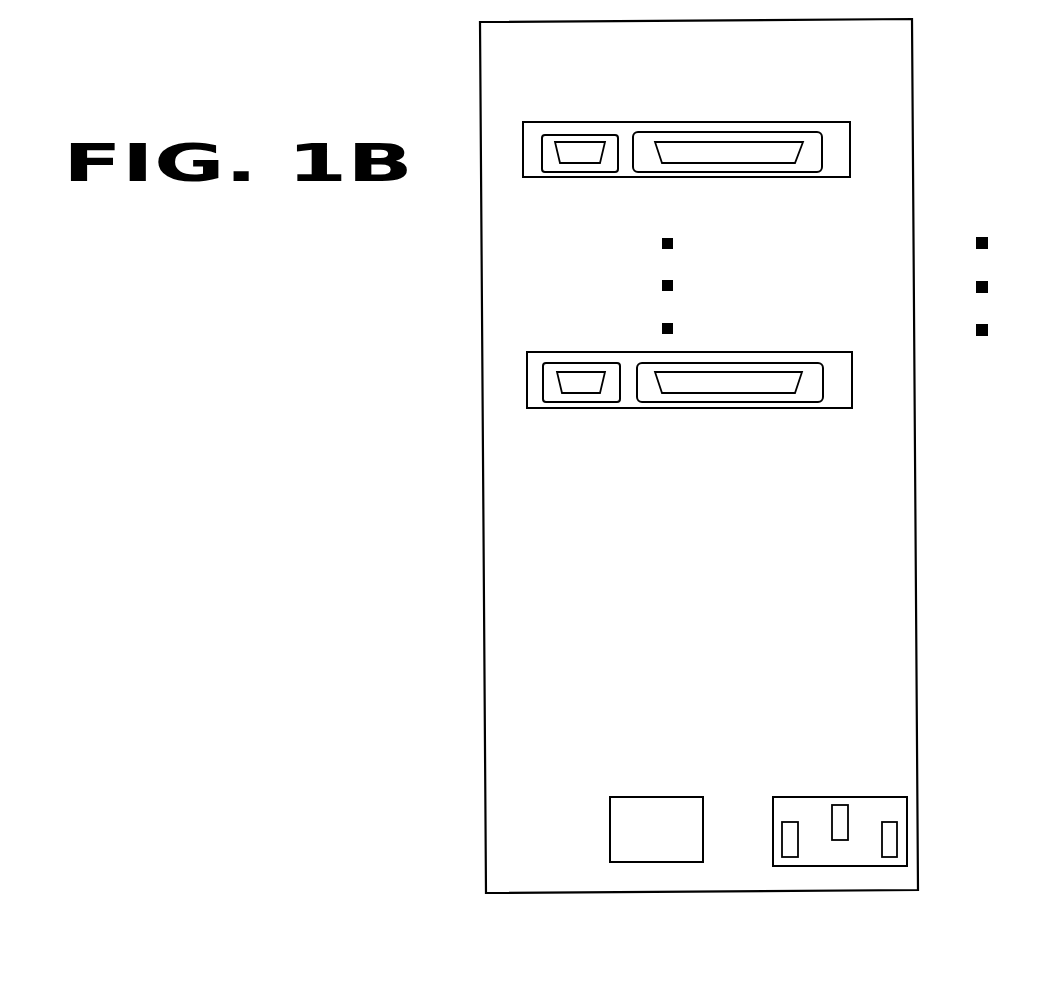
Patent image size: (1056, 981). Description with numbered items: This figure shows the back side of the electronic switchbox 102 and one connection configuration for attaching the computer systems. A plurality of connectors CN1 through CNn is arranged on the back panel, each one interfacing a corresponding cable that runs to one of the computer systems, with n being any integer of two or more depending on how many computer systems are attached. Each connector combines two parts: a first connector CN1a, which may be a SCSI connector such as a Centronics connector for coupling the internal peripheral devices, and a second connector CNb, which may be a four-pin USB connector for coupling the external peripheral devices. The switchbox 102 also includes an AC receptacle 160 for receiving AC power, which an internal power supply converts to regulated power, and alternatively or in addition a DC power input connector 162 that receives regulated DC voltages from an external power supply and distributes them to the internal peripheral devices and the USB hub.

The electronic switchbox 102 is at (913, 80).
The first connector CN1 is at (850, 150).
The nth connector CNn is at (852, 374).
The second connector CNb is at (484, 268).
The first connector CN1a is at (758, 267).
The AC receptacle 160 is at (907, 805).
The DC power input connector 162 is at (682, 846).